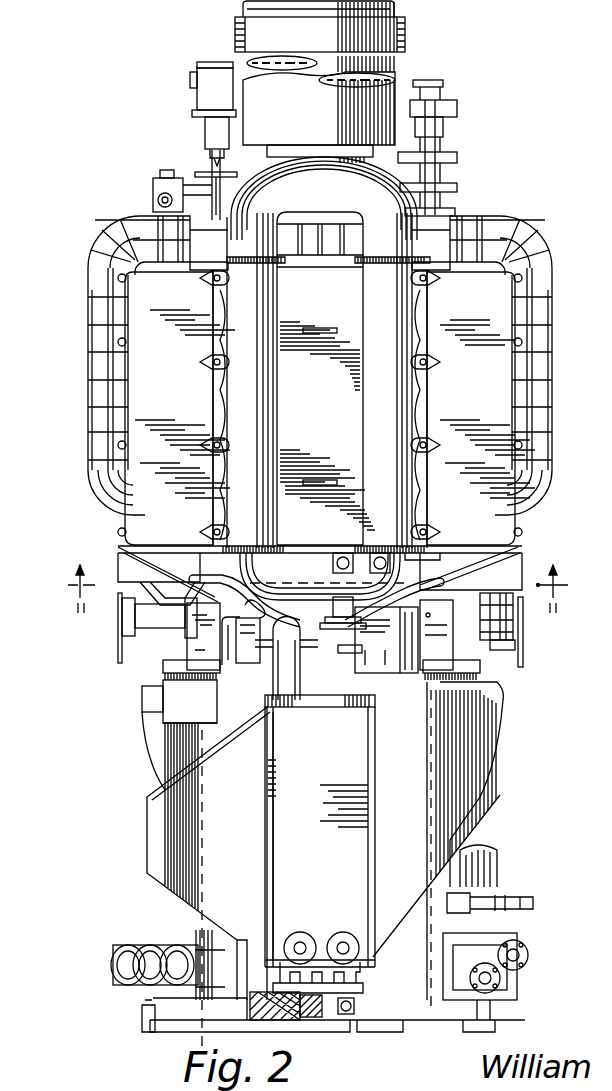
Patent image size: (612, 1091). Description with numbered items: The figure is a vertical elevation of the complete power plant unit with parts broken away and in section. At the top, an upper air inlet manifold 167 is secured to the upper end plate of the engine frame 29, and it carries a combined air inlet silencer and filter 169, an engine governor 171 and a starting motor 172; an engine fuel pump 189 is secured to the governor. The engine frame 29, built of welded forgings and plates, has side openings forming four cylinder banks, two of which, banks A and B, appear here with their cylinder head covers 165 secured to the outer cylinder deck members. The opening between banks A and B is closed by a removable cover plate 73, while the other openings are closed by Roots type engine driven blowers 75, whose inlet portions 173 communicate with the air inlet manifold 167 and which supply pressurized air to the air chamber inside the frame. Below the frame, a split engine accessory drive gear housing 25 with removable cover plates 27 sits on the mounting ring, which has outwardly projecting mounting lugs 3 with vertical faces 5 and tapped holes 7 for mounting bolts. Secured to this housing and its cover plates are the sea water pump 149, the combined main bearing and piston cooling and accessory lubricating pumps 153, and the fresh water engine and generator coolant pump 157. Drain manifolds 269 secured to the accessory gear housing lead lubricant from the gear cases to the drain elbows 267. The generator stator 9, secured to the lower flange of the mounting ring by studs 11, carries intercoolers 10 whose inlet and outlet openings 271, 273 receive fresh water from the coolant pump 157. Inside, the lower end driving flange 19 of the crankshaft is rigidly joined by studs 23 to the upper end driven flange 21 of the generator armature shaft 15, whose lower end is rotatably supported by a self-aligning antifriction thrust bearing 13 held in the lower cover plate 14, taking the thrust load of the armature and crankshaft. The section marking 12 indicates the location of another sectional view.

The combined air inlet silencer and filter 169 is at (397, 74).
The engine governor 171 is at (197, 100).
The starting motor 172 is at (444, 96).
The engine fuel pump 189 is at (162, 178).
The inlet portion of the blower 173 is at (153, 243).
The engine driven blower 75 is at (100, 372).
The cylinder head cover 165 is at (125, 468).
The upper air inlet manifold 167 is at (202, 266).
The cylinder bank B is at (140, 318).
The cylinder bank A is at (500, 318).
The removable cover plate 73 is at (342, 436).
The engine frame 29 is at (222, 405).
The removable cover plate 27 is at (128, 572).
The split engine accessory drive gear housing 25 is at (507, 573).
The drain manifold 269 is at (210, 578).
The section line 12 is at (315, 589).
The fresh water engine and generator coolant pump 157 is at (135, 645).
The tapped hole 7 is at (190, 628).
The vertical face 5 is at (226, 636).
The stud 23 is at (250, 620).
The lower end driving flange 19 is at (288, 645).
The upper end driven flange 21 is at (352, 650).
The generator armature shaft 15 is at (350, 650).
The mounting lug 3 is at (218, 665).
The combined main bearing and piston cooling and accessory lubricating pump 153 is at (510, 617).
The sea water pump 149 is at (523, 655).
The stud 11 is at (165, 658).
The drain elbow 267 is at (322, 700).
The intercooler 10 is at (167, 848).
The generator stator 9 is at (178, 760).
The inlet opening of the intercooler 271 is at (300, 936).
The outlet opening of the intercooler 273 is at (343, 936).
The self-aligning antifriction thrust bearing 13 is at (272, 992).
The lower cover plate 14 is at (435, 1008).